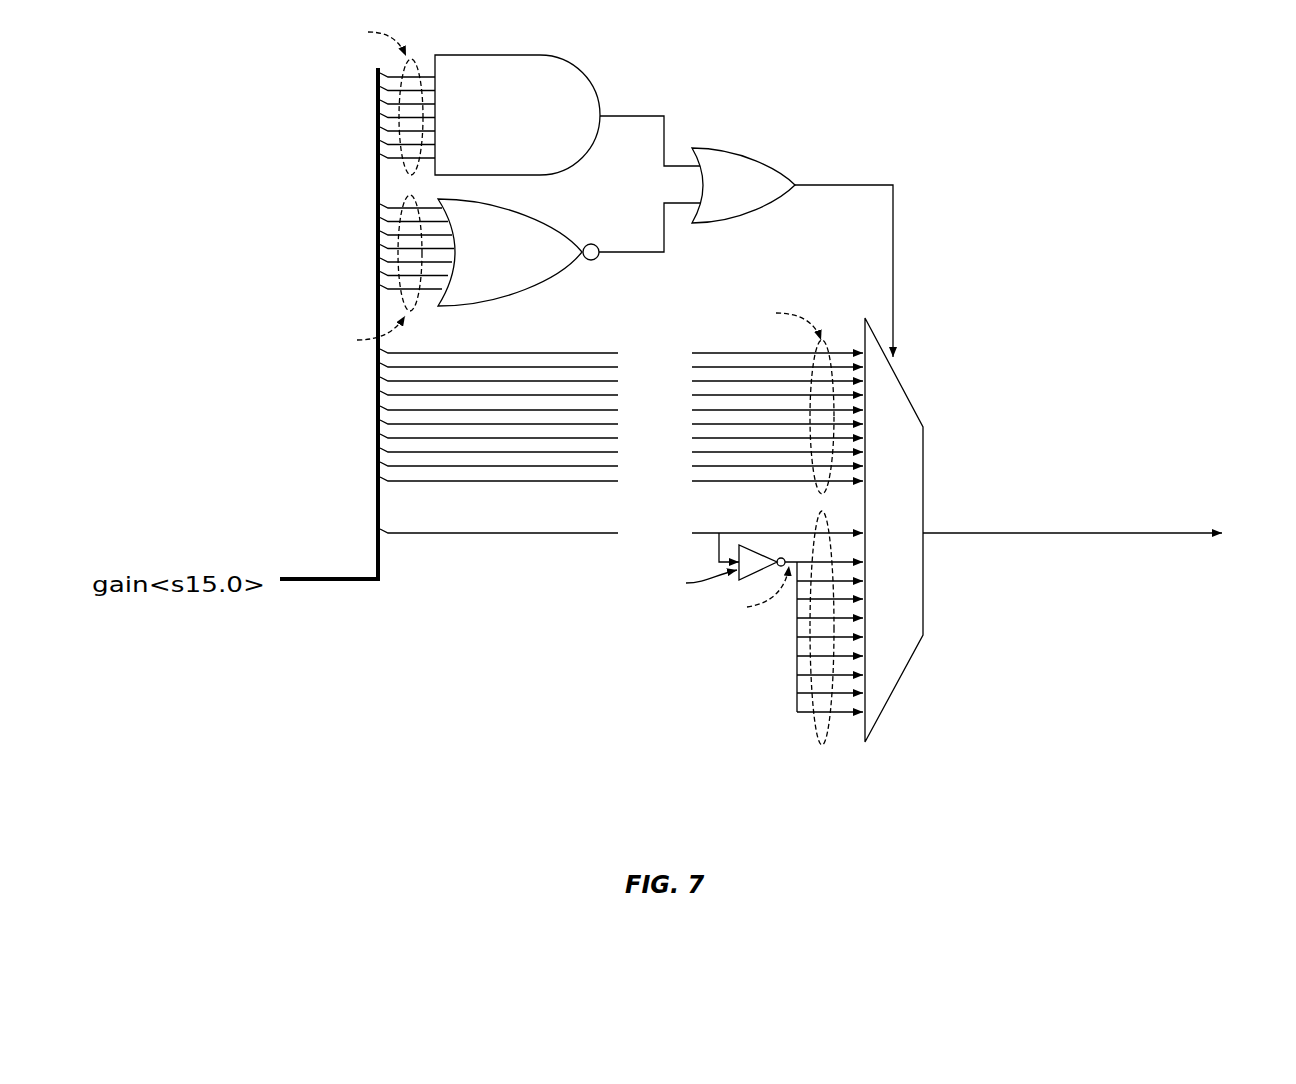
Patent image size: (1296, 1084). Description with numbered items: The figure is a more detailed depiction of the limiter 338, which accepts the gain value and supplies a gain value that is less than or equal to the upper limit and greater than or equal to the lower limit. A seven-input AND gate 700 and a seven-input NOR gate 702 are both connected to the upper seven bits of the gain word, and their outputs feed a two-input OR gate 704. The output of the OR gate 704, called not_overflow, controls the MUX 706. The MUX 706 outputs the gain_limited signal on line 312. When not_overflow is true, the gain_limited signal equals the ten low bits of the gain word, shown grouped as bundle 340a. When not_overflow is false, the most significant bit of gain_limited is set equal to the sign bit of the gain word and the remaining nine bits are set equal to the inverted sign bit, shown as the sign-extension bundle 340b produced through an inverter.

The 7-input AND gate 700 is at (536, 130).
The 7-input NOR gate 702 is at (528, 264).
The 2-input OR gate 704 is at (755, 197).
The MUX 706 is at (912, 545).
The gain[9:0] bit bundle 340a is at (621, 382).
The sign-extension bit bundle 340b is at (486, 532).
The line 312 is at (1068, 536).
The limiter 338 is at (1038, 95).